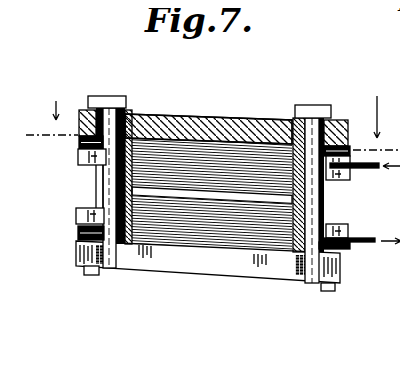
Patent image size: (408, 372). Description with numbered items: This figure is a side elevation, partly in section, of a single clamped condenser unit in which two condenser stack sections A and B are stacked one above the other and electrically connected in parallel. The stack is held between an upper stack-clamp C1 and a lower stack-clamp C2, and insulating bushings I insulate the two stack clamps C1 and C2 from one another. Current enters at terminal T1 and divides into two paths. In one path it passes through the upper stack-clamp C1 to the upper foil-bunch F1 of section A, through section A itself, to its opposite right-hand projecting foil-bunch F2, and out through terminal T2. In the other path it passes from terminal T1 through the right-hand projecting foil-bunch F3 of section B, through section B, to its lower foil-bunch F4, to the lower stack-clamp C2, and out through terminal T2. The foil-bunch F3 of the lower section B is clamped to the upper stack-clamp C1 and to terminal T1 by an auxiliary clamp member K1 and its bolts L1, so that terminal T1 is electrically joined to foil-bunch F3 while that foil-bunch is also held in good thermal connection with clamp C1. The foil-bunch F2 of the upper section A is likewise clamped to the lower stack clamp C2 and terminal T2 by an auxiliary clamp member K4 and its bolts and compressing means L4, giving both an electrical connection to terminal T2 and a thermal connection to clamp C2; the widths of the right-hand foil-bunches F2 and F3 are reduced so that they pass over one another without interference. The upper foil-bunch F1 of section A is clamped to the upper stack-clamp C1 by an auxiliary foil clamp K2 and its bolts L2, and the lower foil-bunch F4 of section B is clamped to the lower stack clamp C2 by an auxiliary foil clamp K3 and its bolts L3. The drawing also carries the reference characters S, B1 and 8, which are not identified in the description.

The upper stack-clamp C1 is at (215, 107).
The lower stack-clamp C2 is at (217, 256).
The upper condenser stack section A is at (211, 137).
The lower condenser stack section B is at (200, 212).
The slot between winding sections S is at (167, 183).
The insulating bushings I is at (121, 104).
The clamping bolt B1 is at (116, 78).
The bolts L1 is at (330, 113).
The bolts L2 is at (80, 100).
The bolts L3 is at (76, 263).
The bolts and compressing means L4 is at (316, 283).
The upper foil-bunch F1 is at (70, 134).
The right-hand projecting foil-bunch F2 is at (340, 240).
The right-hand projecting foil-bunch F3 is at (340, 142).
The lower foil-bunch F4 is at (69, 224).
The auxiliary clamp member K1 is at (332, 170).
The auxiliary foil clamp K2 is at (70, 150).
The auxiliary foil clamp K3 is at (68, 207).
The auxiliary clamp member K4 is at (330, 217).
The terminal T1 is at (372, 156).
The terminal T2 is at (368, 232).
The section line 8- 8 is at (211, 123).